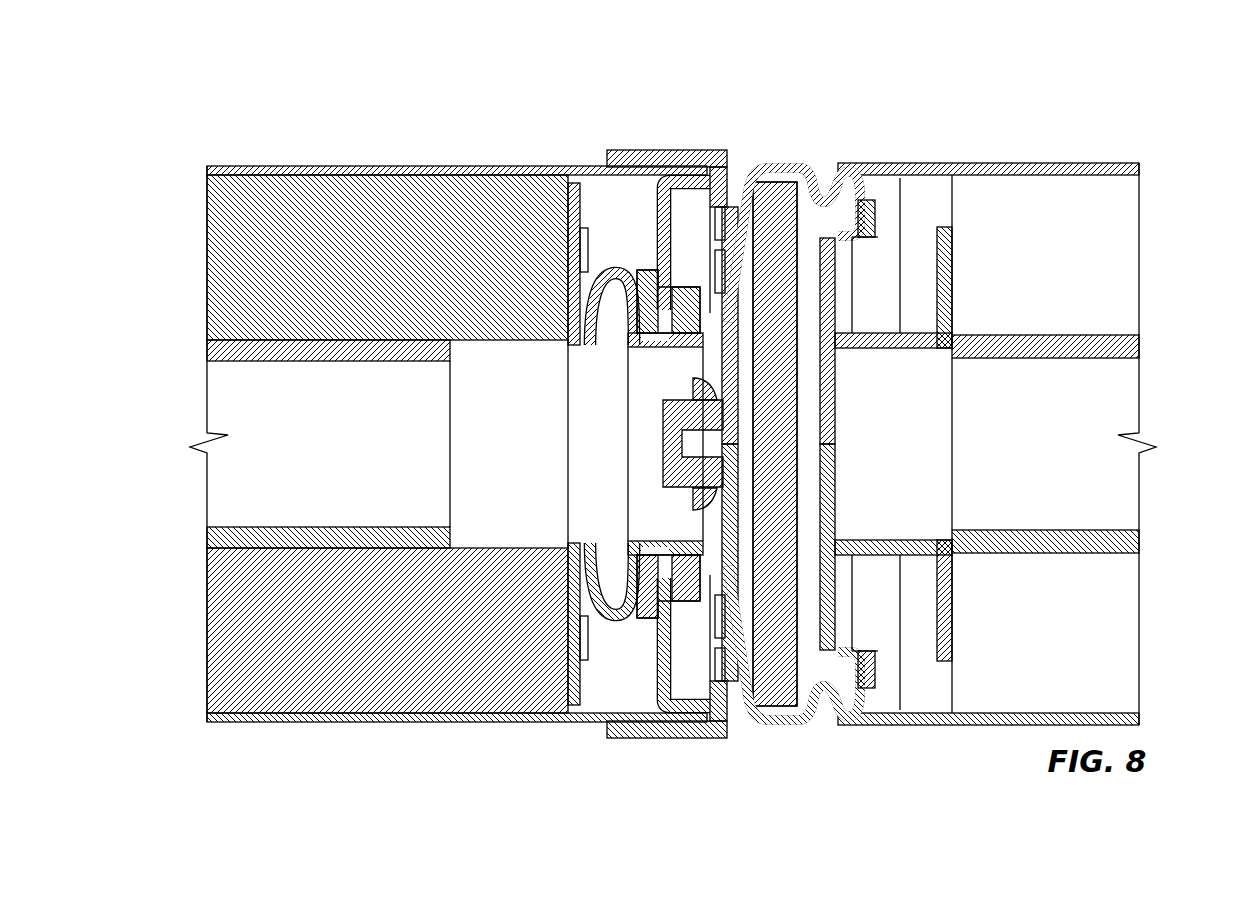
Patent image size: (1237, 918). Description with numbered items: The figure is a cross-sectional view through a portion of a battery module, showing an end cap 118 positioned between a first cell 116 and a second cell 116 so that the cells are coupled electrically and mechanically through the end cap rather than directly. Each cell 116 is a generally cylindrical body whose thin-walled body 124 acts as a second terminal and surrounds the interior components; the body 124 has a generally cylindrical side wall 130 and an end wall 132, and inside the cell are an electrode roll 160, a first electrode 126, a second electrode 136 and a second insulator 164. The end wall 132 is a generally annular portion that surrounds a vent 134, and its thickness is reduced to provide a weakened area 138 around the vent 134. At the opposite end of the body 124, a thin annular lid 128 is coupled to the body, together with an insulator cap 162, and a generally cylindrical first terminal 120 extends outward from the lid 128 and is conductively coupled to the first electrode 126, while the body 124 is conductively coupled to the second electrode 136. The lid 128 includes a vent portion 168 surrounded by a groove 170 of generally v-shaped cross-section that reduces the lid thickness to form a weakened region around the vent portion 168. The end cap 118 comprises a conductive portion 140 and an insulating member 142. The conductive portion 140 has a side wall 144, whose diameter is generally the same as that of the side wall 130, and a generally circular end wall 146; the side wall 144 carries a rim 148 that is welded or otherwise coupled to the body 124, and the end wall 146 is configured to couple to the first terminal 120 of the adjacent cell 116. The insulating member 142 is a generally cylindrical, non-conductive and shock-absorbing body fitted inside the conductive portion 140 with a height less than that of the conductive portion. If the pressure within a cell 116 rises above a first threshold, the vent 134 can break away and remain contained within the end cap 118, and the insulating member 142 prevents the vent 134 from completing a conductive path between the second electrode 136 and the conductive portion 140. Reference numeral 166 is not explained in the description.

The cell 116 is at (442, 131).
The end cap 118 is at (846, 812).
The first terminal 120 is at (694, 595).
The body 124 is at (327, 722).
The first electrode 126 is at (552, 225).
The lid 128 is at (658, 223).
The side wall 130 is at (368, 166).
The end wall 132 is at (823, 188).
The vent 134 is at (900, 267).
The second electrode 136 is at (950, 257).
The weakened area 138 is at (837, 237).
The conductive portion 140 is at (760, 716).
The insulating member 142 is at (781, 702).
The side wall 144 is at (775, 164).
The end wall 146 is at (727, 158).
The rim 148 is at (843, 712).
The electrode roll 160 is at (268, 207).
The insulator cap 162 is at (679, 150).
The second insulator 164 is at (827, 287).
The spring arm 166 is at (612, 622).
The vent portion 168 is at (660, 650).
The groove 170 is at (683, 702).